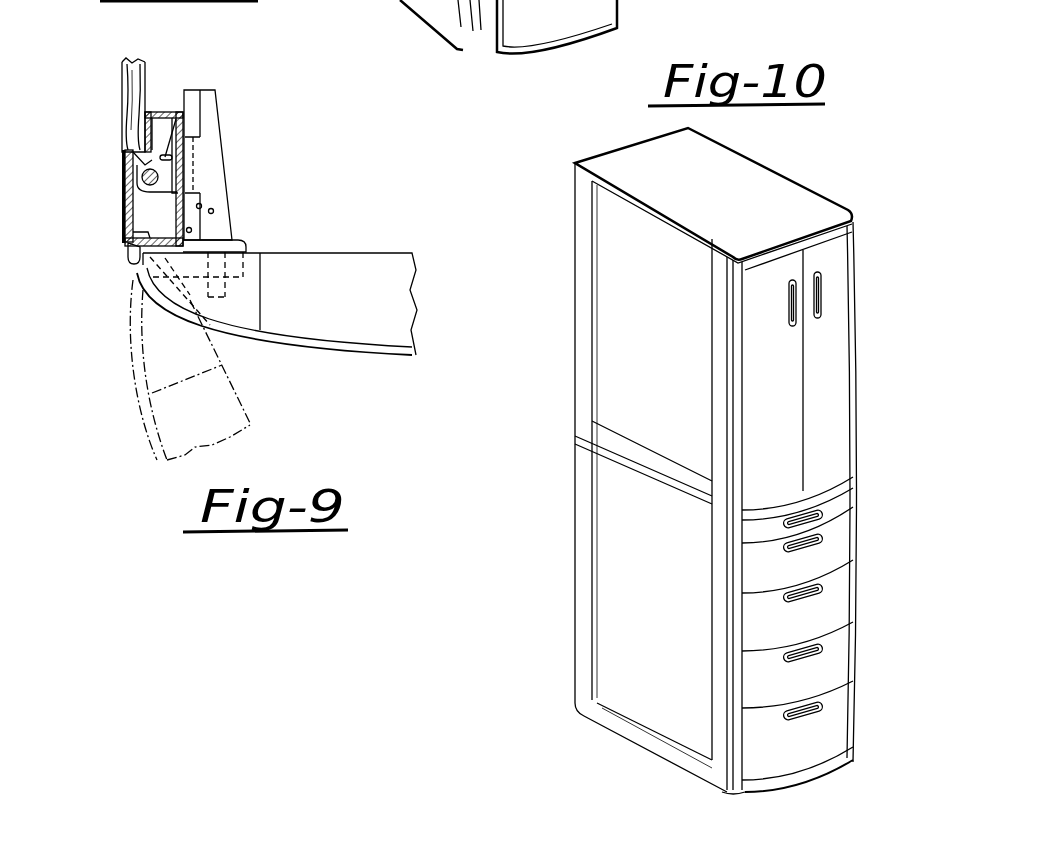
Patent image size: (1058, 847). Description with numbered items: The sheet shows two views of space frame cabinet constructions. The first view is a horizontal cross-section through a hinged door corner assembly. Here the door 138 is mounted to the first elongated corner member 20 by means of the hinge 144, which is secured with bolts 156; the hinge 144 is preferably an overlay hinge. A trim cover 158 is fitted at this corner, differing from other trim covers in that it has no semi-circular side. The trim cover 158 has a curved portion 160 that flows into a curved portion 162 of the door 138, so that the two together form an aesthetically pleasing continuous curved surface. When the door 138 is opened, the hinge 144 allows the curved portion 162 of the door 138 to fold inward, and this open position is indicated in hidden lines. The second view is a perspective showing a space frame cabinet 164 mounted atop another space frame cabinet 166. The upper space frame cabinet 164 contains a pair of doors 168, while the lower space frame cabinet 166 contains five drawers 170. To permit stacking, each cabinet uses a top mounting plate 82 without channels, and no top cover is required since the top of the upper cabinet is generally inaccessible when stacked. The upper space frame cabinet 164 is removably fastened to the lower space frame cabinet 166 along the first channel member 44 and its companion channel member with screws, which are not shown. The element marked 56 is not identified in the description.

In FIG. 9, the first elongated corner member 20 is at (128, 205).
In FIG. 9, the first channel member 44 is at (122, 107).
In FIG. 9, the post upper portion 56 is at (124, 80).
In FIG. 10, the top mounting plate 82 is at (628, 163).
In FIG. 9, the door 138 is at (352, 328).
In FIG. 9, the hinge 144 is at (212, 187).
In FIG. 9, the bolts 156 is at (167, 110).
In FIG. 9, the trim cover 158 is at (125, 181).
In FIG. 9, the curved portion 160 is at (120, 255).
In FIG. 9, the curved portion 162 is at (150, 307).
In FIG. 10, the space frame cabinet 164 is at (784, 163).
In FIG. 10, the space frame cabinet 166 is at (568, 563).
In FIG. 10, the doors 168 is at (827, 353).
In FIG. 10, the drawers 170 is at (840, 587).